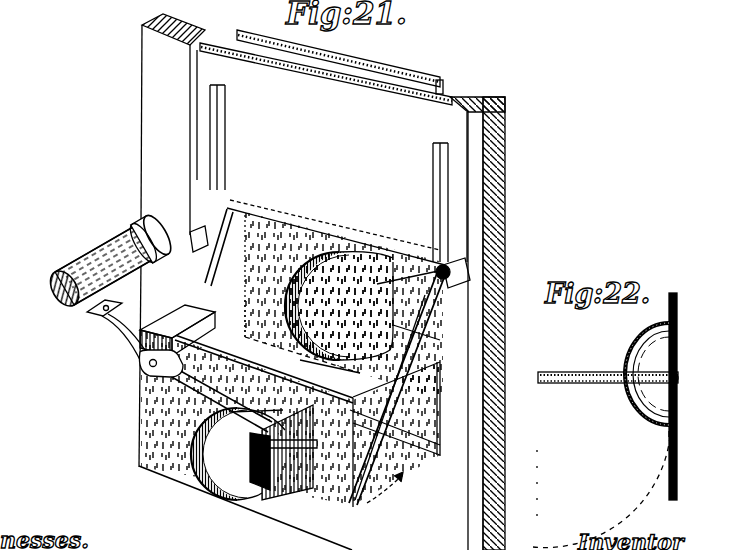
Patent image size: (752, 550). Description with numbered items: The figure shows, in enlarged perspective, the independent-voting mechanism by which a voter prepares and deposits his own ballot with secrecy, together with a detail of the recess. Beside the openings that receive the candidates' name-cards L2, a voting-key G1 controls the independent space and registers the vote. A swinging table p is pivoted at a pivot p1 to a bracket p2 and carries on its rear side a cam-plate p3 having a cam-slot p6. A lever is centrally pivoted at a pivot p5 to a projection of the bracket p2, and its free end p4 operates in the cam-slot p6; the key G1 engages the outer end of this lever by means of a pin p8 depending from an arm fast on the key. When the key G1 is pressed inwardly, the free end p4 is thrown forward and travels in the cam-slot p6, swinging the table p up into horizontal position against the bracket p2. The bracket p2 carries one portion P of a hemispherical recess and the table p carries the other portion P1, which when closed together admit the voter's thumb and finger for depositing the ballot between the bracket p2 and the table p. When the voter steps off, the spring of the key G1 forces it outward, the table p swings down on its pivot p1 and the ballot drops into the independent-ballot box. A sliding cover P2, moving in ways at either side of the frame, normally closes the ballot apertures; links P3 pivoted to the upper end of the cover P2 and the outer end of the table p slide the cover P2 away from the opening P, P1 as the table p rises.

In FIG. 21, the candidates' name-cards L2 is at (439, 80).
In FIG. 21, the voting-key G1 is at (118, 245).
In FIG. 21, the portion of hemispherical recess P is at (150, 397).
In FIG. 22, the portion of hemispherical recess P is at (634, 343).
In FIG. 21, the portion of hemispherical recess P1 is at (192, 455).
In FIG. 22, the portion of hemispherical recess P1 is at (636, 404).
In FIG. 21, the sliding cover P2 is at (450, 271).
In FIG. 21, the links P3 is at (395, 462).
In FIG. 22, the swinging table p is at (537, 385).
In FIG. 21, the pivot p1 is at (370, 372).
In FIG. 21, the bracket p2 is at (258, 318).
In FIG. 22, the bracket p2 is at (563, 386).
In FIG. 21, the cam-plate p3 is at (277, 494).
In FIG. 21, the free end of lever p4 is at (306, 445).
In FIG. 21, the lever pivot p5 is at (138, 366).
In FIG. 21, the cam-slot p6 is at (318, 505).
In FIG. 21, the pin p8 is at (108, 330).